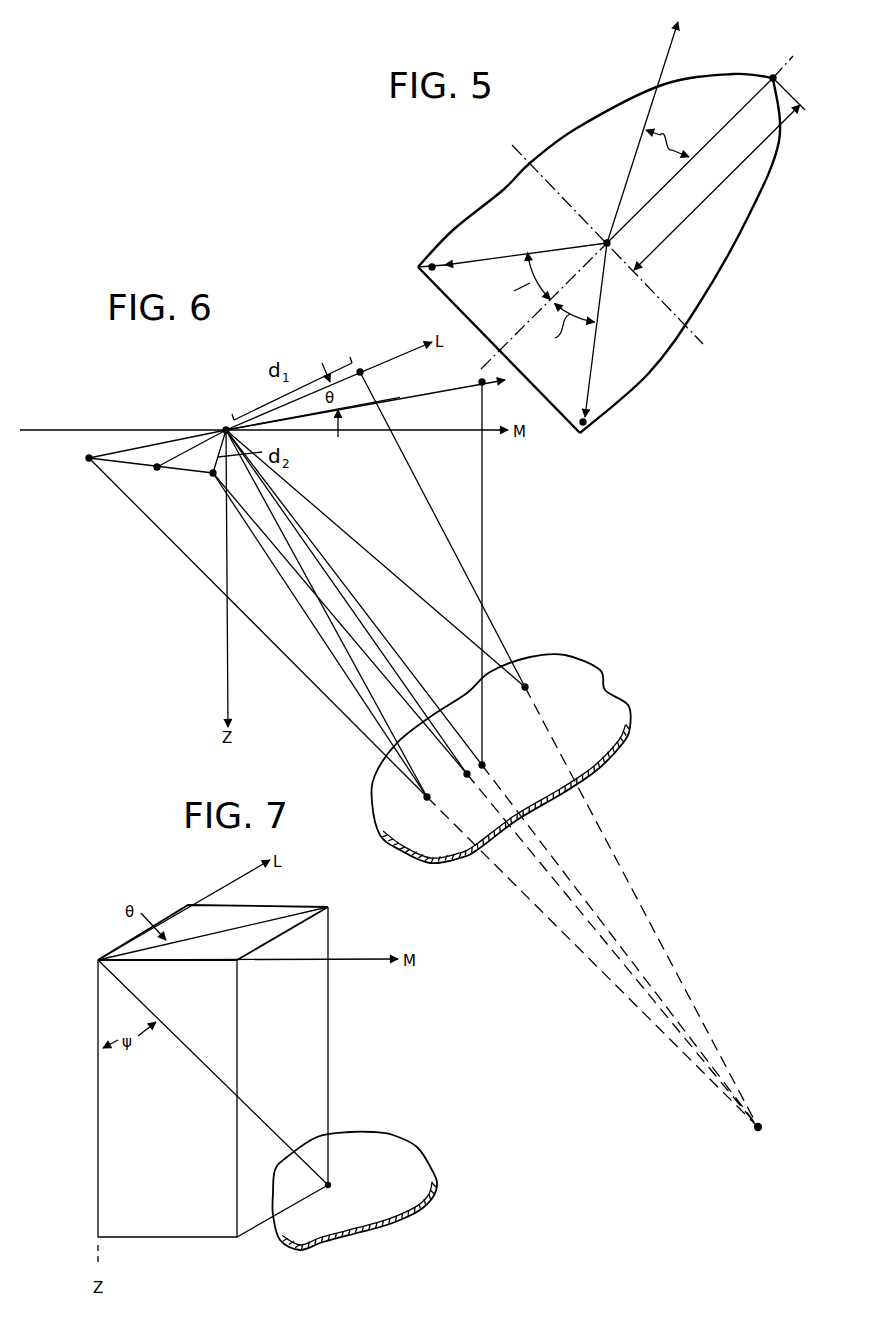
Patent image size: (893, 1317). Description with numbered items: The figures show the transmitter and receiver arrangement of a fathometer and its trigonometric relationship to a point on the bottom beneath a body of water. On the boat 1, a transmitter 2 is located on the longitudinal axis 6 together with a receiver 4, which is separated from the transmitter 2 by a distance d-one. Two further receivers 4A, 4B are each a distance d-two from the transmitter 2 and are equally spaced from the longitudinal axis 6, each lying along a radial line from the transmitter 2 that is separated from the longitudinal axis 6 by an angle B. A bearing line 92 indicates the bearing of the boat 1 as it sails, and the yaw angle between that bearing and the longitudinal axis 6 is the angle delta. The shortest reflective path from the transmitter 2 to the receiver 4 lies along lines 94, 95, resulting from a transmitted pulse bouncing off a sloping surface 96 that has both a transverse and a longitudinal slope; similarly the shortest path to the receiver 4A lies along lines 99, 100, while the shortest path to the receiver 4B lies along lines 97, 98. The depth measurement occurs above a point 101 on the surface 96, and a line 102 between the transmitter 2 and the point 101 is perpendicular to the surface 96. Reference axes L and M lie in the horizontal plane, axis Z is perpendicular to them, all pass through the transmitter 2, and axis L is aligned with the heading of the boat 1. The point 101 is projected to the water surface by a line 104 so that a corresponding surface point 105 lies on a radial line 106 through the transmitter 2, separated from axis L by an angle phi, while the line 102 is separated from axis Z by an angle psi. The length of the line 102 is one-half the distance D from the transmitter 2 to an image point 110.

In FIG. 5, the boat 1 is at (577, 128).
In FIG. 5, the transmitter 2 is at (608, 248).
In FIG. 6, the transmitter 2 is at (224, 428).
In FIG. 7, the transmitter 2 is at (97, 959).
In FIG. 5, the receiver 4 is at (777, 77).
In FIG. 6, the receiver 4 is at (360, 370).
In FIG. 5, the receiver 4A is at (428, 262).
In FIG. 6, the receiver 4A is at (87, 459).
In FIG. 5, the receiver 4B is at (590, 424).
In FIG. 6, the receiver 4B is at (211, 475).
In FIG. 5, the longitudinal axis 6 is at (724, 122).
In FIG. 5, the bearing line 92 is at (659, 68).
In FIG. 6, the line 94 is at (378, 560).
In FIG. 6, the line 95 is at (418, 487).
In FIG. 6, the sloping surface 96 is at (598, 708).
In FIG. 7, the sloping surface 96 is at (420, 1172).
In FIG. 6, the line 97 is at (338, 594).
In FIG. 6, the line 98 is at (264, 533).
In FIG. 6, the line 99 is at (350, 657).
In FIG. 6, the line 100 is at (180, 553).
In FIG. 6, the point 101 is at (486, 762).
In FIG. 7, the point 101 is at (331, 1184).
In FIG. 6, the line 102 is at (380, 625).
In FIG. 7, the line 102 is at (190, 1052).
In FIG. 6, the line 104 is at (484, 518).
In FIG. 7, the line 104 is at (329, 1052).
In FIG. 6, the surface point 105 is at (480, 385).
In FIG. 7, the surface point 105 is at (329, 906).
In FIG. 6, the radial line 106 is at (397, 397).
In FIG. 7, the radial line 106 is at (202, 938).
In FIG. 6, the image point 110 is at (622, 919).